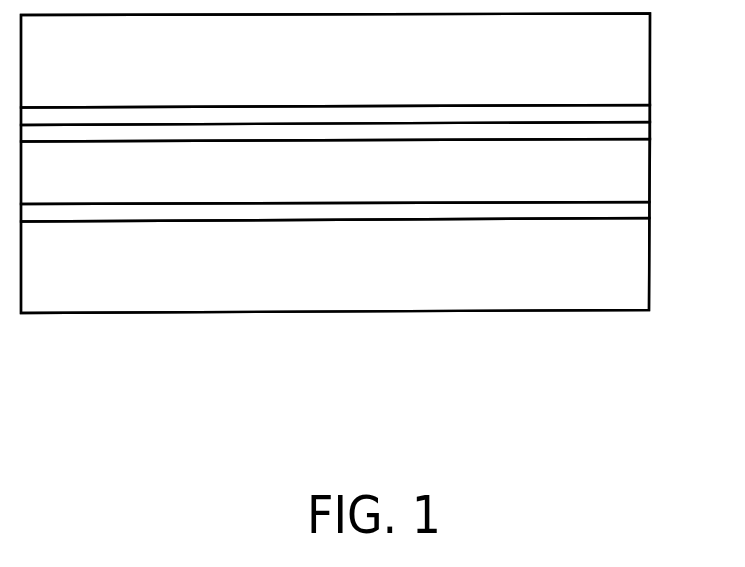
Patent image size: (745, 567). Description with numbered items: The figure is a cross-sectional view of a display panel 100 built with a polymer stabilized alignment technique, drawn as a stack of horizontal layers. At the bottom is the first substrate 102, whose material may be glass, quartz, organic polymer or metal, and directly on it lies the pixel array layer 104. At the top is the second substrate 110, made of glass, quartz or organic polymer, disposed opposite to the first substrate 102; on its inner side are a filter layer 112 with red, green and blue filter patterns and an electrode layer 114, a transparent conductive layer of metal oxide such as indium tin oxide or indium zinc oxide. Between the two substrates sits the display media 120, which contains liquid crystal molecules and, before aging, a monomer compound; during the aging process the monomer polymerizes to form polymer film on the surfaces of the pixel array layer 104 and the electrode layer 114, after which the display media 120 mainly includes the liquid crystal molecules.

The display panel 100 is at (650, 387).
The first substrate 102 is at (643, 280).
The pixel array layer 104 is at (643, 209).
The display media 120 is at (643, 173).
The electrode layer 114 is at (642, 131).
The filter layer 112 is at (642, 113).
The second substrate 110 is at (642, 76).